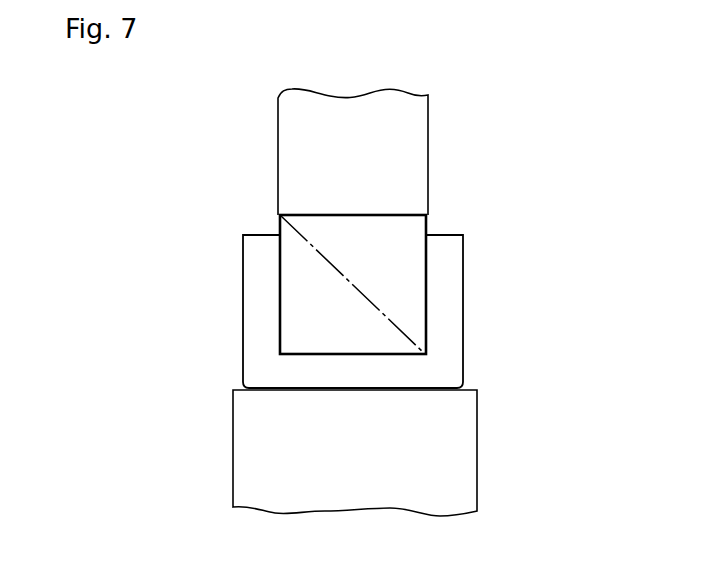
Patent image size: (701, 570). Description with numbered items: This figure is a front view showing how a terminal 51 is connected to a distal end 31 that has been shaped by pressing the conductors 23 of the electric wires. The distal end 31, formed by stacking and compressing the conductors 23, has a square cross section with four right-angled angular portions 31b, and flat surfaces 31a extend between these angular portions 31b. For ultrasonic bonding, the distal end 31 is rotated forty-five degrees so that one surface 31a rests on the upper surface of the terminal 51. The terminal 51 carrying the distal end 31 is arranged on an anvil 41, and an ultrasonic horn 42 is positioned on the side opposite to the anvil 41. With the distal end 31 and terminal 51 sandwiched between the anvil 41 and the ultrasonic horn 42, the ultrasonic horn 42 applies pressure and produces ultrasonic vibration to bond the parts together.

The conductor 23 is at (327, 232).
The distal end 31 is at (428, 260).
The surface 31a is at (355, 213).
The angular portion 31b is at (278, 215).
The anvil 41 is at (438, 478).
The ultrasonic horn 42 is at (422, 123).
The terminal 51 is at (442, 370).